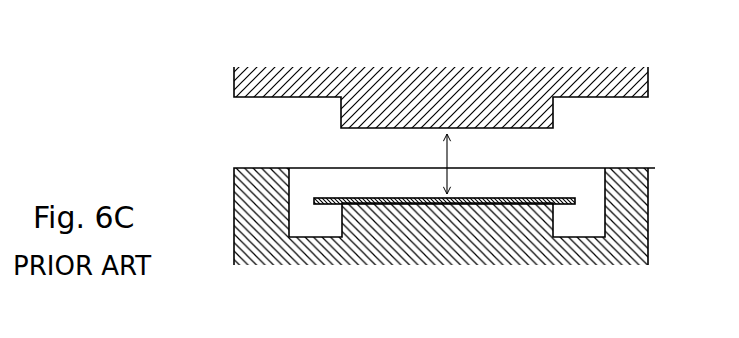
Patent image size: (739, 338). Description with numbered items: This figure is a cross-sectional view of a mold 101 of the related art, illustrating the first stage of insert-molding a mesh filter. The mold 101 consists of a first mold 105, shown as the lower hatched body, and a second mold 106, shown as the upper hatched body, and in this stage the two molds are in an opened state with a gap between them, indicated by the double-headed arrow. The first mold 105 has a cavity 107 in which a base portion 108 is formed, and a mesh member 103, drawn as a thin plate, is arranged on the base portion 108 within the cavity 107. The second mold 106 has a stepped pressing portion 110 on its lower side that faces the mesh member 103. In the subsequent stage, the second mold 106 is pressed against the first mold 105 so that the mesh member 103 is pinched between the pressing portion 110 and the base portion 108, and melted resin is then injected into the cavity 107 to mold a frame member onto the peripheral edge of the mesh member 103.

The mold 101 is at (639, 63).
The mesh member 103 is at (562, 198).
The first mold 105 is at (416, 248).
The second mold 106 is at (400, 87).
The cavity 107 is at (583, 222).
The base portion 108 is at (342, 214).
The pressing portion 110 is at (341, 118).